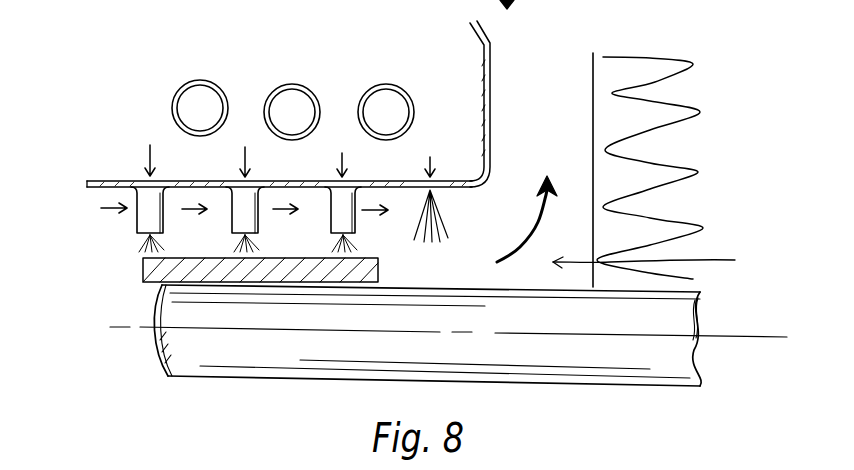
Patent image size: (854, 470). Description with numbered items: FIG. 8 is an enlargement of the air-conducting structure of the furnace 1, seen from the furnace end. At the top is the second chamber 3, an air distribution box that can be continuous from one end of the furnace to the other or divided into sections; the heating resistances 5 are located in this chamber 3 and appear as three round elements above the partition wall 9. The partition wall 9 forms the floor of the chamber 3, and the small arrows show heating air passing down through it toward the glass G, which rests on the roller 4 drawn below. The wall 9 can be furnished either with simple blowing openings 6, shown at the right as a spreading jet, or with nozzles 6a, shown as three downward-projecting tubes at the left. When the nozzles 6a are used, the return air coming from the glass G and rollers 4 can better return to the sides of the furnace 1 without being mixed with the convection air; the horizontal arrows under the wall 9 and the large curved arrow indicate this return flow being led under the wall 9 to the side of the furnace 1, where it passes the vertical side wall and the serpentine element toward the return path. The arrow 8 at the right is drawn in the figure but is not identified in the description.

The furnace 1 is at (642, 98).
The second chamber 3 is at (450, 82).
The roller 4 is at (625, 348).
The heating resistances 5 is at (193, 108).
The blowing openings 6 is at (447, 201).
The nozzles 6a is at (136, 228).
The flow direction arrow 8 is at (655, 258).
The partition wall 9 is at (110, 183).
The glass G is at (152, 287).